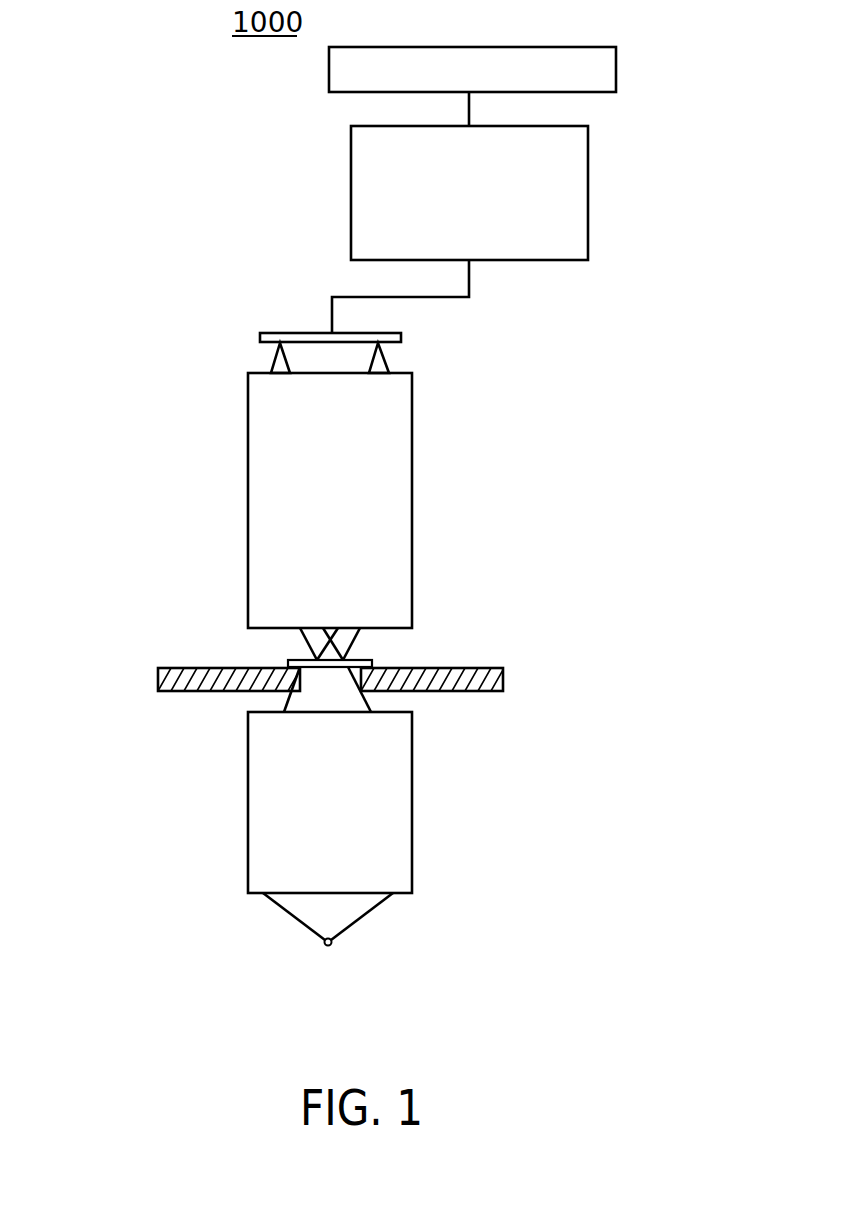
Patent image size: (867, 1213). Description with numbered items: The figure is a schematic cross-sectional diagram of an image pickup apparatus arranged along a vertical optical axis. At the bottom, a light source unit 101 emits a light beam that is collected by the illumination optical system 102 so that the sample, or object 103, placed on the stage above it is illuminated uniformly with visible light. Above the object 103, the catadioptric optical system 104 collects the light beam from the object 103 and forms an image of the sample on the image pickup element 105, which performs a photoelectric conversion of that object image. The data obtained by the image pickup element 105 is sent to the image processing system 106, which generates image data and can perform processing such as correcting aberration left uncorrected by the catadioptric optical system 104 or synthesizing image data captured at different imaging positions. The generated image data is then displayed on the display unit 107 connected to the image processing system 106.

The light source unit 101 is at (335, 943).
The illumination optical system 102 is at (395, 832).
The object 103 is at (287, 663).
The catadioptric optical system 104 is at (407, 487).
The image pickup element 105 is at (282, 333).
The image processing system 106 is at (570, 228).
The display unit 107 is at (617, 61).